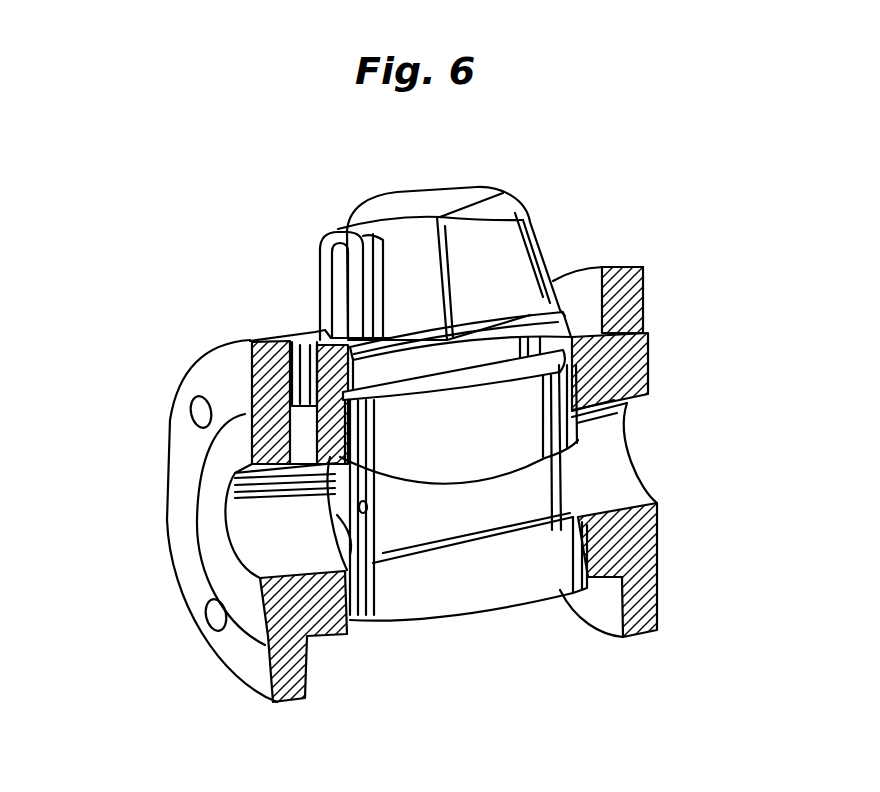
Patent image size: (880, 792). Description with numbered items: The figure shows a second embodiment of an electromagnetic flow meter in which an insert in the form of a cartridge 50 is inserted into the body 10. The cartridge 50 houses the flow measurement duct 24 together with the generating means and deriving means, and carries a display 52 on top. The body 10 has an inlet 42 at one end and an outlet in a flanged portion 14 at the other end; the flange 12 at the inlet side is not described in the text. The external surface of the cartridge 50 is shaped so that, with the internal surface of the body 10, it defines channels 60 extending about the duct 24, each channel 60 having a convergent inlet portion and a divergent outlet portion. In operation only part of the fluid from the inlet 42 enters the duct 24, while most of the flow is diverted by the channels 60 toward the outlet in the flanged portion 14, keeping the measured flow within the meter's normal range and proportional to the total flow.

The body 10 is at (343, 630).
The inlet flange 12 is at (183, 446).
The flanged portion 14 is at (657, 603).
The flow measurement duct 24 is at (373, 553).
The inlet 42 is at (260, 553).
The cartridge 50 is at (543, 583).
The display 52 is at (417, 187).
The channels 60 is at (337, 505).